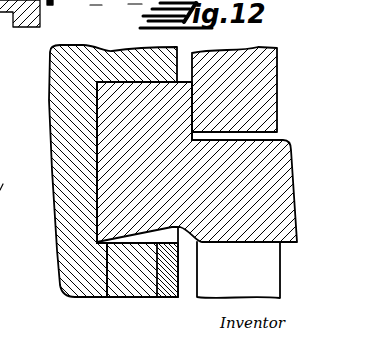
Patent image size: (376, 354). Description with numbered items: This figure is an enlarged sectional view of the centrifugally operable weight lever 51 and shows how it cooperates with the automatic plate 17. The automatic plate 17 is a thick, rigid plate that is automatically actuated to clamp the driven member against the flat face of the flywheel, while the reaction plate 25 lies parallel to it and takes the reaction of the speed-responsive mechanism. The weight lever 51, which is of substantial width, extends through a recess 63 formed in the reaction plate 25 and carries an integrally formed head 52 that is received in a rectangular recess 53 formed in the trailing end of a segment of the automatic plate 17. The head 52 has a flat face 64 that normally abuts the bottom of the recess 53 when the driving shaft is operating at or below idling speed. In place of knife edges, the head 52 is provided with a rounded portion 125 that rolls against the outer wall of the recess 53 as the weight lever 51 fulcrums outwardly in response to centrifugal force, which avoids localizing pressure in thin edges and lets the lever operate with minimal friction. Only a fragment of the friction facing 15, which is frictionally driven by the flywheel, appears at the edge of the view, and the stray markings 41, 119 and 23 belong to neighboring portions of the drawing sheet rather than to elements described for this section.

The automatic plate 17 is at (75, 65).
The reaction plate 25 is at (253, 94).
The weight lever 51 is at (247, 216).
The head 52 is at (125, 123).
The rectangular recess 53 is at (157, 297).
The recess 63 is at (265, 273).
The flat face 64 is at (97, 152).
The rounded portion 125 is at (107, 297).
The facing 15 is at (188, 177).
The adjacent figure fragment 41 is at (94, 3).
The adjacent figure fragment 119 is at (136, 3).
The adjacent figure fragment 23 is at (8, 207).